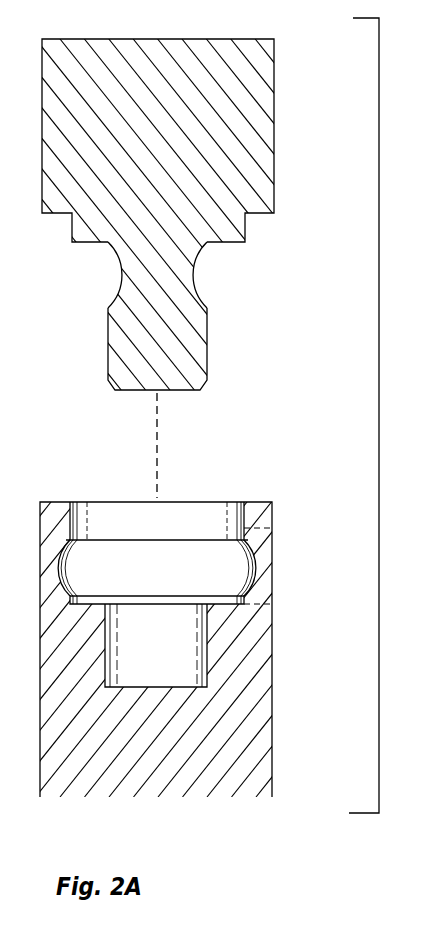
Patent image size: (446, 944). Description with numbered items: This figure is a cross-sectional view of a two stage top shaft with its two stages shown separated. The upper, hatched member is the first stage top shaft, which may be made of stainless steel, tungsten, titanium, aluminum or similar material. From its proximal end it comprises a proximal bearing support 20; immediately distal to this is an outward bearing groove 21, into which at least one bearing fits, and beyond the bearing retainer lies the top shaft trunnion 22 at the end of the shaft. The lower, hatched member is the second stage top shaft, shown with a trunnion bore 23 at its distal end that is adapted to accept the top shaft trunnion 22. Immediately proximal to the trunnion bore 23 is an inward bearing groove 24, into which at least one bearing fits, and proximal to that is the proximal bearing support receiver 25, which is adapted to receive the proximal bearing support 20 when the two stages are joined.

The proximal bearing support 20 is at (232, 230).
The outward bearing groove 21 is at (193, 280).
The top shaft trunnion 22 is at (208, 343).
The trunnion bore 23 is at (60, 573).
The inward bearing groove 24 is at (88, 545).
The proximal bearing support receiver 25 is at (132, 683).